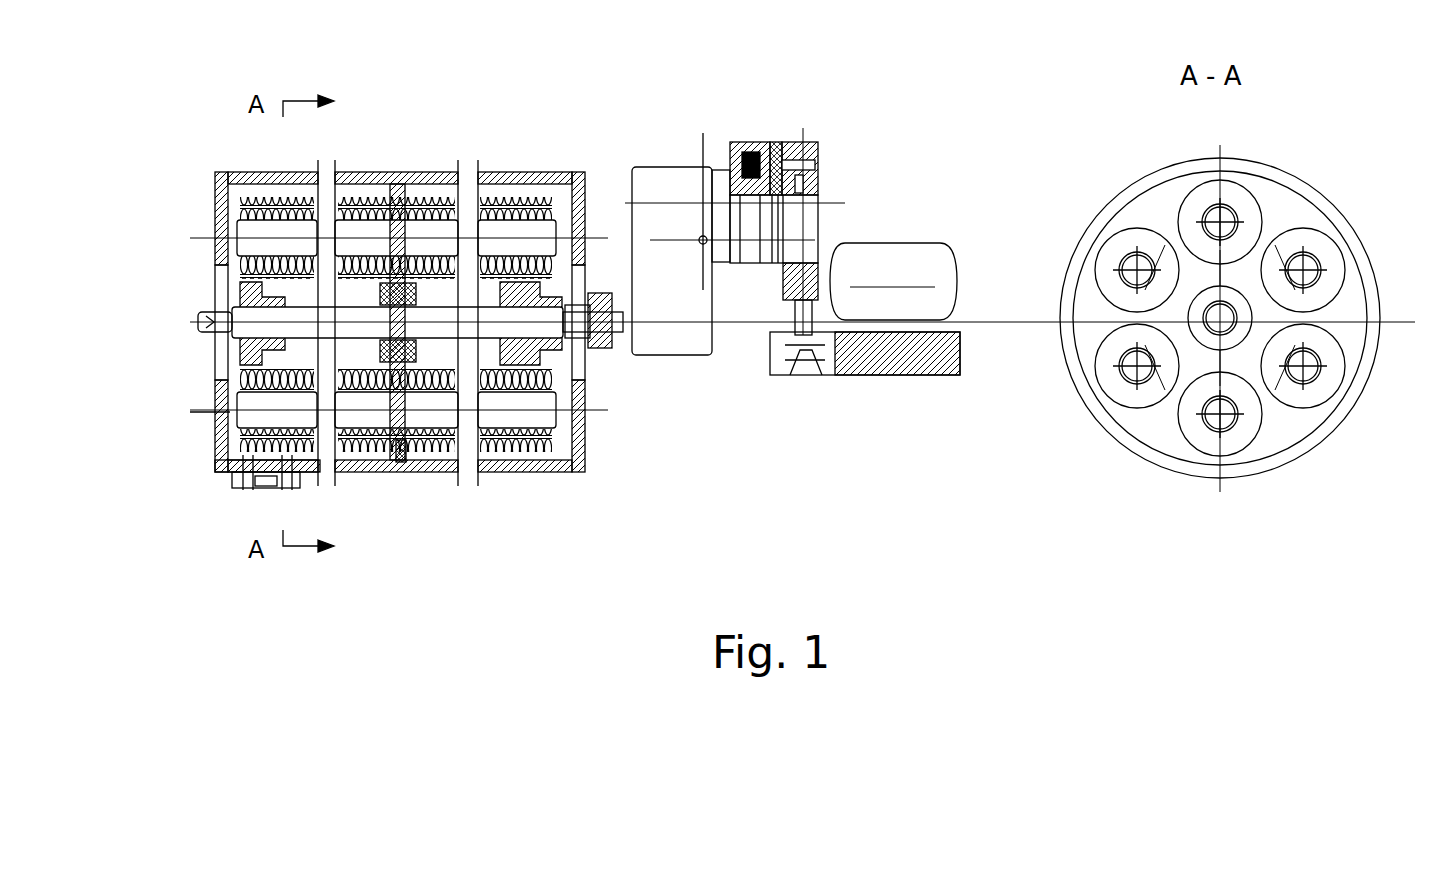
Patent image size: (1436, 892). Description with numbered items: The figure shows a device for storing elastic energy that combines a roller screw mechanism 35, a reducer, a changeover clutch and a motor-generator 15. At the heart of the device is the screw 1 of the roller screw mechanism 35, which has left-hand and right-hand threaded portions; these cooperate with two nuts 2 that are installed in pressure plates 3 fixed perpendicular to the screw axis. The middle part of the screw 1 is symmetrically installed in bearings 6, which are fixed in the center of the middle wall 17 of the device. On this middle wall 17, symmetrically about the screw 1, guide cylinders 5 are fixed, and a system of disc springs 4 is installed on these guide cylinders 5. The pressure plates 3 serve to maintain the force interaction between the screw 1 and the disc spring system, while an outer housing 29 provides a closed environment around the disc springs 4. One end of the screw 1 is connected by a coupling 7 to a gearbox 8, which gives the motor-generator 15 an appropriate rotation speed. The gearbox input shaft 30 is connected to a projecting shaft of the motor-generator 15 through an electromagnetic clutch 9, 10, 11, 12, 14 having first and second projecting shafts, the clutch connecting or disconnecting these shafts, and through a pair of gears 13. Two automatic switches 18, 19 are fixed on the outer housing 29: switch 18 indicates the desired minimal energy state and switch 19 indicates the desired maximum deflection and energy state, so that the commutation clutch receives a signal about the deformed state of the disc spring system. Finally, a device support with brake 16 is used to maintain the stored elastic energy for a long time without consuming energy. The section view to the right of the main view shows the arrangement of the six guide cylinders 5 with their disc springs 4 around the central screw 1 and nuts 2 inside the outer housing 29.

The screw 1 is at (200, 318).
The nuts 2 is at (240, 346).
The pressure plates 3 is at (245, 362).
The disc springs 4 is at (320, 174).
The guide cylinders 5 is at (200, 412).
The bearings 6 is at (418, 174).
The coupling 7 is at (583, 178).
The gearbox 8 is at (637, 172).
The electromagnetic clutch 9 is at (727, 165).
The electromagnetic clutch 10 is at (733, 140).
The electromagnetic clutch 11 is at (763, 140).
The electromagnetic clutch 12 is at (777, 140).
The pair of gears 13 is at (808, 140).
The electromagnetic clutch 14 is at (820, 170).
The motor-generator 15 is at (900, 250).
The device support with brake 16 is at (878, 368).
The middle wall 17 is at (405, 455).
The automatic switch 18 is at (225, 482).
The automatic switch 19 is at (262, 490).
The outer housing 29 is at (245, 172).
The gearbox input shaft 30 is at (720, 213).
The roller screw mechanism 35 is at (556, 444).